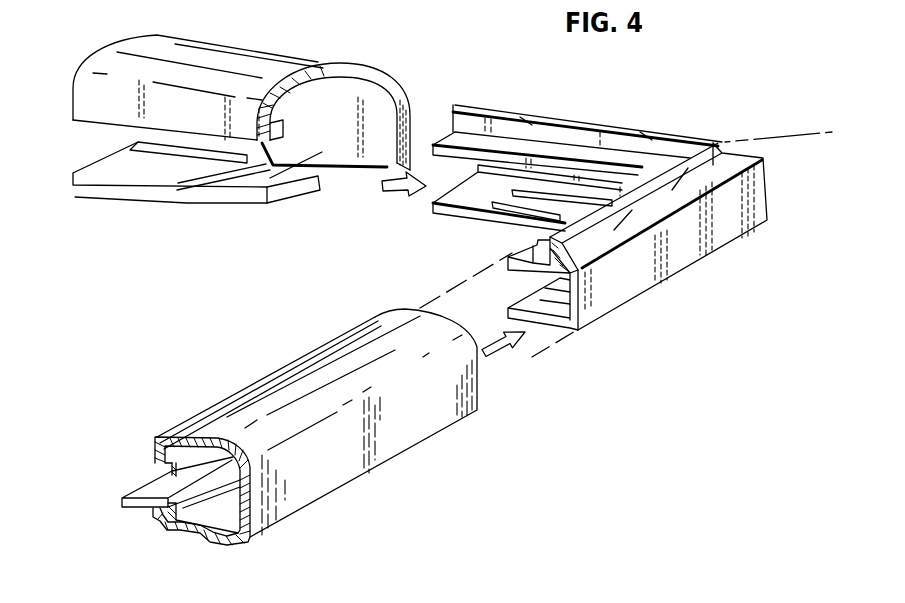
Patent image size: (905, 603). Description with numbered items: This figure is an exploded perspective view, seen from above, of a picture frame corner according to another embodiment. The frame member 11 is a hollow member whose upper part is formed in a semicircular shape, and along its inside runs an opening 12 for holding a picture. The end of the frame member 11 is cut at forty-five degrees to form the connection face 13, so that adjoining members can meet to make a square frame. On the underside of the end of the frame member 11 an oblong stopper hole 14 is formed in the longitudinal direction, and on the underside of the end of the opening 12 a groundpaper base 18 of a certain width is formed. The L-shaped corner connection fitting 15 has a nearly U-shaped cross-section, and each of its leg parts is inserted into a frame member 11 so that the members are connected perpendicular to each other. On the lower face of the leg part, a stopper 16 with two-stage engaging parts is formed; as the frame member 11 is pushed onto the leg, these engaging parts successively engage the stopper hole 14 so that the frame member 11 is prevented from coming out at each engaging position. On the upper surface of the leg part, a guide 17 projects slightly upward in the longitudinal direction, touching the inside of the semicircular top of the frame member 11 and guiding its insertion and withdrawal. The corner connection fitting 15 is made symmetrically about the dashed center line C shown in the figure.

The frame member 11 is at (170, 53).
The opening 12 is at (262, 173).
The connection face 13 is at (388, 85).
The stopper hole 14 is at (157, 148).
The corner connection fitting 15 is at (668, 257).
The stopper 16 is at (520, 218).
The guide 17 is at (585, 126).
The groundpaper base 18 is at (197, 182).
The axis C is at (773, 136).